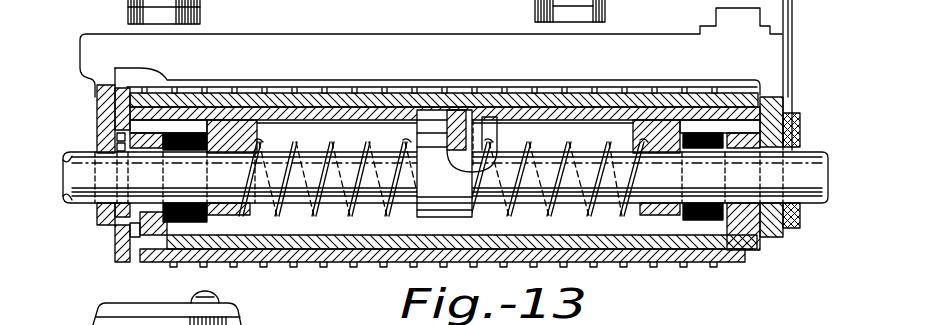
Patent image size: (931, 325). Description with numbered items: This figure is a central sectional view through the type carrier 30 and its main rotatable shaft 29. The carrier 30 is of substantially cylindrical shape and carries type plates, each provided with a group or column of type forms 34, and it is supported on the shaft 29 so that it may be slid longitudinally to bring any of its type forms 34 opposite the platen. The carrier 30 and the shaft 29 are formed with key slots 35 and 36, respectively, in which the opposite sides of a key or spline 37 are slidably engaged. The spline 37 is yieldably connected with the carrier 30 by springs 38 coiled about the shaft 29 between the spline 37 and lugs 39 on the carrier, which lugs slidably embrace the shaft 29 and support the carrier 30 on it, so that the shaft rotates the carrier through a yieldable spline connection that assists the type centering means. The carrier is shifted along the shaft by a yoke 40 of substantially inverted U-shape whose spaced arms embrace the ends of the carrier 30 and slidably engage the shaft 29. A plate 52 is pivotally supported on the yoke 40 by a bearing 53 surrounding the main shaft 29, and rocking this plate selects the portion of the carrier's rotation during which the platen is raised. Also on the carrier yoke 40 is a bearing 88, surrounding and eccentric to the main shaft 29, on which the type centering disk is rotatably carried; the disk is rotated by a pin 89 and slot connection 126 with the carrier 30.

The main rotatable shaft 29 is at (813, 160).
The type carrier 30 is at (233, 114).
The type forms 34 is at (697, 262).
The key slot 35 is at (495, 113).
The key slot 36 is at (503, 157).
The key or spline 37 is at (475, 115).
The springs 38 is at (372, 142).
The lugs 39 is at (263, 120).
The yoke 40 is at (630, 50).
The plate 52 is at (787, 63).
The bearing 53 is at (800, 215).
The bearing 88 is at (117, 128).
The pin 89 is at (128, 253).
The slot connection 126 is at (138, 252).